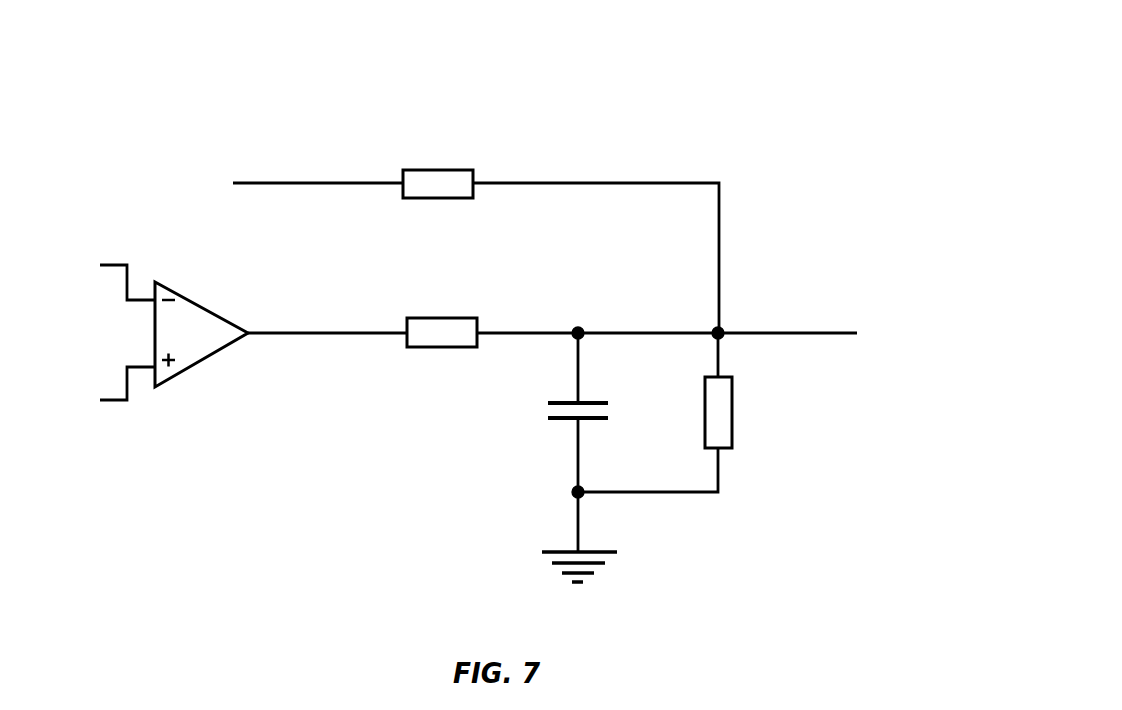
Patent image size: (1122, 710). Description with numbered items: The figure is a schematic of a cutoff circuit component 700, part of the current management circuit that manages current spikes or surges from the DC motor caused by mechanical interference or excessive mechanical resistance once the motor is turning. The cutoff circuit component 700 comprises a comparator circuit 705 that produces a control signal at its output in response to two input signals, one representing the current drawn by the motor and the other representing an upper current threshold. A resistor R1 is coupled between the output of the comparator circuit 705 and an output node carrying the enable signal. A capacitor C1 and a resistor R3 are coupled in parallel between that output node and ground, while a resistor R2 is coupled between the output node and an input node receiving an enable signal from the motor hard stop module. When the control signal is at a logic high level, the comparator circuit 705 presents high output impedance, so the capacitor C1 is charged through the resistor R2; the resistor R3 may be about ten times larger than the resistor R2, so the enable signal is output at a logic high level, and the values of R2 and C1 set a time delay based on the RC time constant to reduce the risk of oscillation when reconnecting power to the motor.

The cutoff circuit component 700 is at (218, 58).
The comparator circuit 705 is at (158, 283).
The resistor R1 is at (442, 312).
The resistor R2 is at (438, 161).
The resistor R3 is at (735, 412).
The capacitor C1 is at (595, 406).